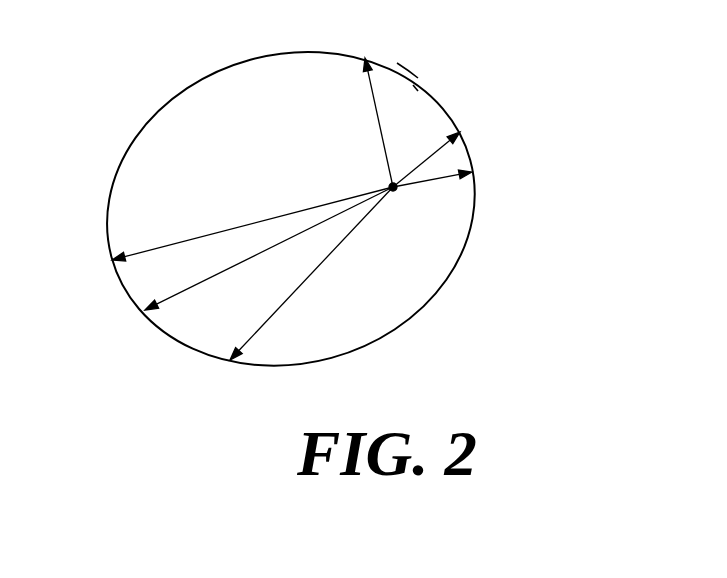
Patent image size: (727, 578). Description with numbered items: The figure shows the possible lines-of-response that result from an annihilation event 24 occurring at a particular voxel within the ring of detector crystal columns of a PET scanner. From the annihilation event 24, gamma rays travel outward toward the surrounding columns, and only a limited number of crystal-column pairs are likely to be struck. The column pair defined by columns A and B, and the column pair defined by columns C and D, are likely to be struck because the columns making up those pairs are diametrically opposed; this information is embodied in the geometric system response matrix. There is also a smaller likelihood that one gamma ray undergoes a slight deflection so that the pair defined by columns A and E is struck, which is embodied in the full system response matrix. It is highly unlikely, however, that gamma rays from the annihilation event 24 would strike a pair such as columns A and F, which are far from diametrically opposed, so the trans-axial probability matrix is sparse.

The annihilation event 24 is at (408, 202).
The column A is at (439, 147).
The column B is at (446, 174).
The column C is at (252, 266).
The column D is at (301, 293).
The column E is at (232, 235).
The column F is at (373, 106).